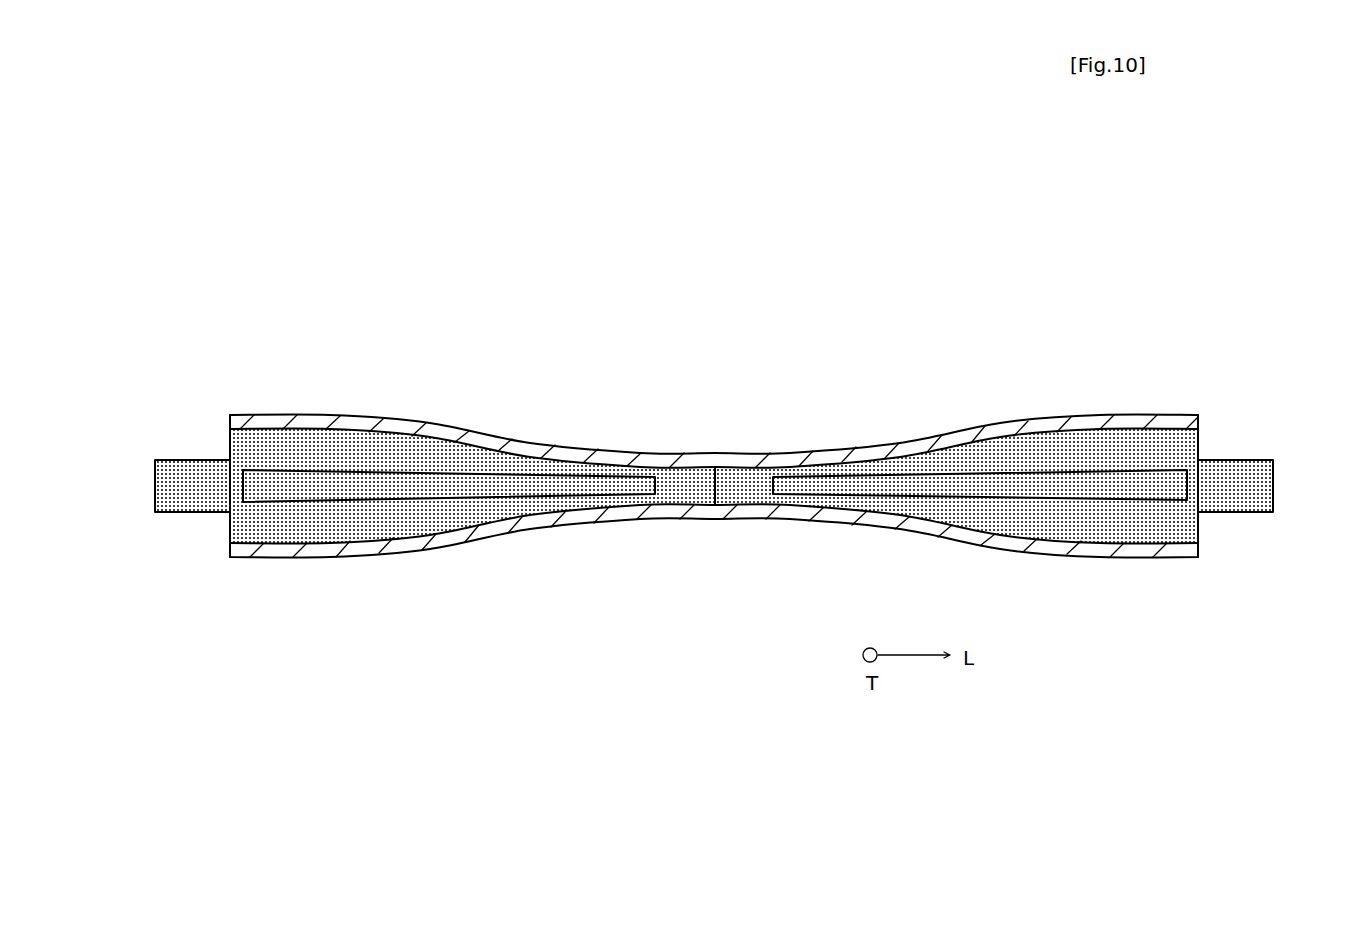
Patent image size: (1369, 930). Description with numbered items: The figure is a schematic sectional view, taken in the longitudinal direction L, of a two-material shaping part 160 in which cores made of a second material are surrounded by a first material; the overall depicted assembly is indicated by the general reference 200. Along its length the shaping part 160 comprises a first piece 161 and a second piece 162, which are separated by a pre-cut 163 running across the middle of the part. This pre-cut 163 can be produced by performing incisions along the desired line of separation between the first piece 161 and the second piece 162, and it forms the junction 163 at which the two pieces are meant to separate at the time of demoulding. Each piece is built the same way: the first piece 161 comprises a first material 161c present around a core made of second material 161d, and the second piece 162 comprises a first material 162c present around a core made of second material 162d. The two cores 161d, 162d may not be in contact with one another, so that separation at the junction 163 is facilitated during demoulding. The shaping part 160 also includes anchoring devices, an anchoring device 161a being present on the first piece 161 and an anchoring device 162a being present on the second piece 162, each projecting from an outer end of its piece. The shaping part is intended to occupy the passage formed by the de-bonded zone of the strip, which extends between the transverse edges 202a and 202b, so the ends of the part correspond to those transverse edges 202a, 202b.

The deformable body 200 is at (1053, 415).
The shaping part 160 is at (800, 510).
The first piece 161 is at (298, 448).
The second piece 162 is at (1177, 447).
The anchoring device 161a is at (193, 485).
The anchoring device 162a is at (1237, 485).
The first material 161c is at (393, 438).
The core made of second material 161d is at (403, 497).
The first material 162c is at (1035, 440).
The core made of second material 162d is at (990, 495).
The pre-cut 163 is at (720, 477).
The transverse edge 202a is at (227, 547).
The transverse edge 202b is at (1203, 545).